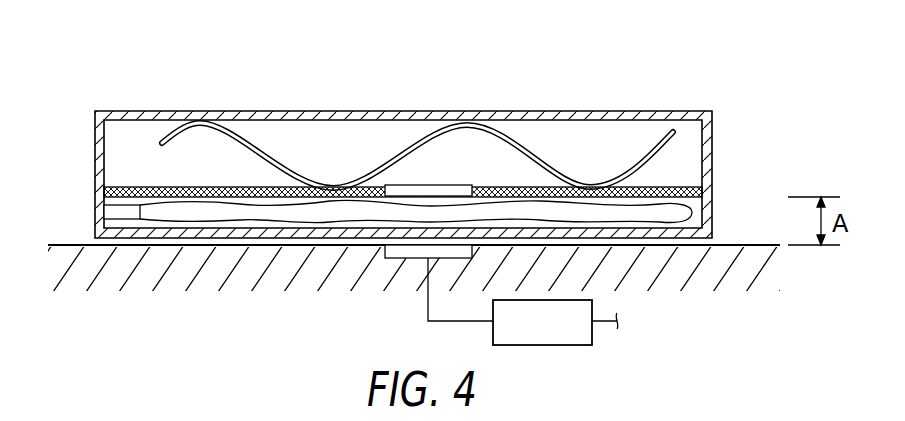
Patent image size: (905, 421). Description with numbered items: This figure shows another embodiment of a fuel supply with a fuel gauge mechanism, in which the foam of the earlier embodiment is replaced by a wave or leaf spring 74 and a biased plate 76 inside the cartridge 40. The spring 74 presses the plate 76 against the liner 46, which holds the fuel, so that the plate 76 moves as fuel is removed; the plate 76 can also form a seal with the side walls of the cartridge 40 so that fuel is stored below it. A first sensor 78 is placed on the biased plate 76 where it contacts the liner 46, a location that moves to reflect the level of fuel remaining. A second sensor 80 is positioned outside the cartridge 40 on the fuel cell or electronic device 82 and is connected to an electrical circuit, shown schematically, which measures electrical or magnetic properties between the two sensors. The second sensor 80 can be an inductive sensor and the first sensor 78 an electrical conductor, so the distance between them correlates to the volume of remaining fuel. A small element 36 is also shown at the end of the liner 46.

The cartridge 40 is at (121, 90).
The wave or leaf spring 74 is at (505, 137).
The biased plate 76 is at (663, 188).
The first sensor 78 is at (433, 188).
The liner 46 is at (590, 211).
The fiber end element 36 is at (115, 212).
The fuel cell or electronic device 82 is at (112, 262).
The second sensor 80 is at (405, 252).